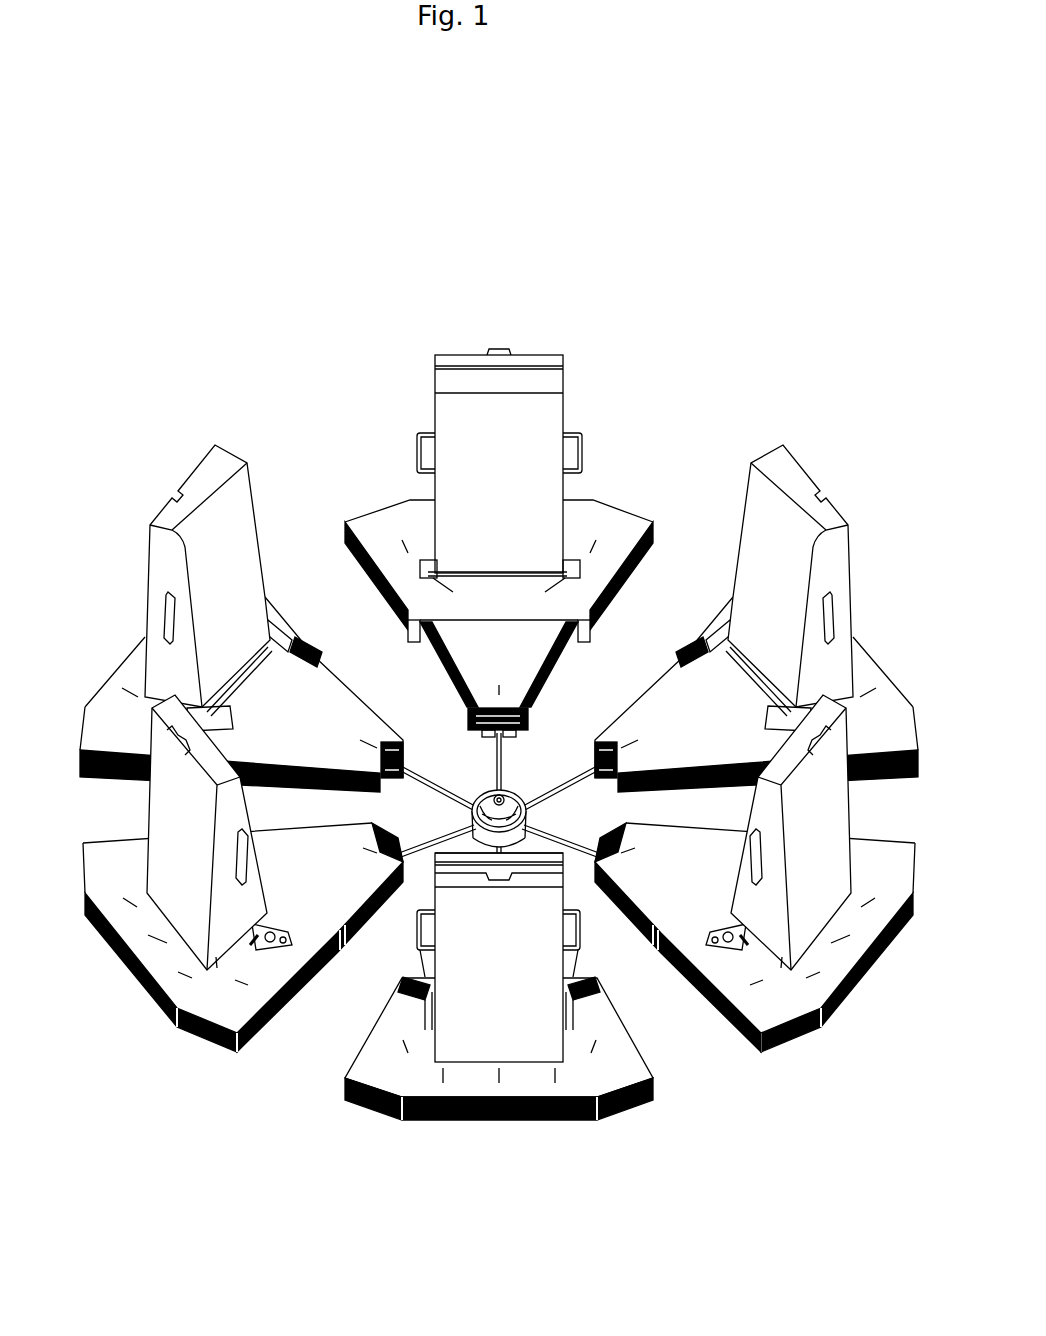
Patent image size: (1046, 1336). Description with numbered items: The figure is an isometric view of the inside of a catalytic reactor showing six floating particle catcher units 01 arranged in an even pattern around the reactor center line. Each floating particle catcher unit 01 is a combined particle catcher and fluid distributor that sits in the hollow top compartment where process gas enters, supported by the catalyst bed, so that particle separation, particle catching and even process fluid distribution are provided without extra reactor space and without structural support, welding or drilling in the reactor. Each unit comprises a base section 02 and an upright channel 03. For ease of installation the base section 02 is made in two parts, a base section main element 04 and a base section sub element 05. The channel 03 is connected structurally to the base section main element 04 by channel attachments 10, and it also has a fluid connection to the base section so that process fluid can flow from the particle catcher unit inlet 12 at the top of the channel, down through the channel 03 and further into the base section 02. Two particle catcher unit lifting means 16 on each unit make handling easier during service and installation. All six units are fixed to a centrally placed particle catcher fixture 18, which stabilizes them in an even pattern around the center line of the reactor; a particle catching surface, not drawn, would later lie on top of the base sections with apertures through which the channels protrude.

The floating particle catcher unit 01 is at (285, 271).
The base section 02 is at (829, 972).
The channel 03 is at (553, 434).
The base section main element 04 is at (863, 939).
The base section sub element 05 is at (657, 886).
The channel attachment 10 is at (247, 959).
The particle catcher unit inlet 12 is at (531, 899).
The particle catcher unit lifting means 16 is at (585, 939).
The particle catcher fixture 18 is at (479, 777).